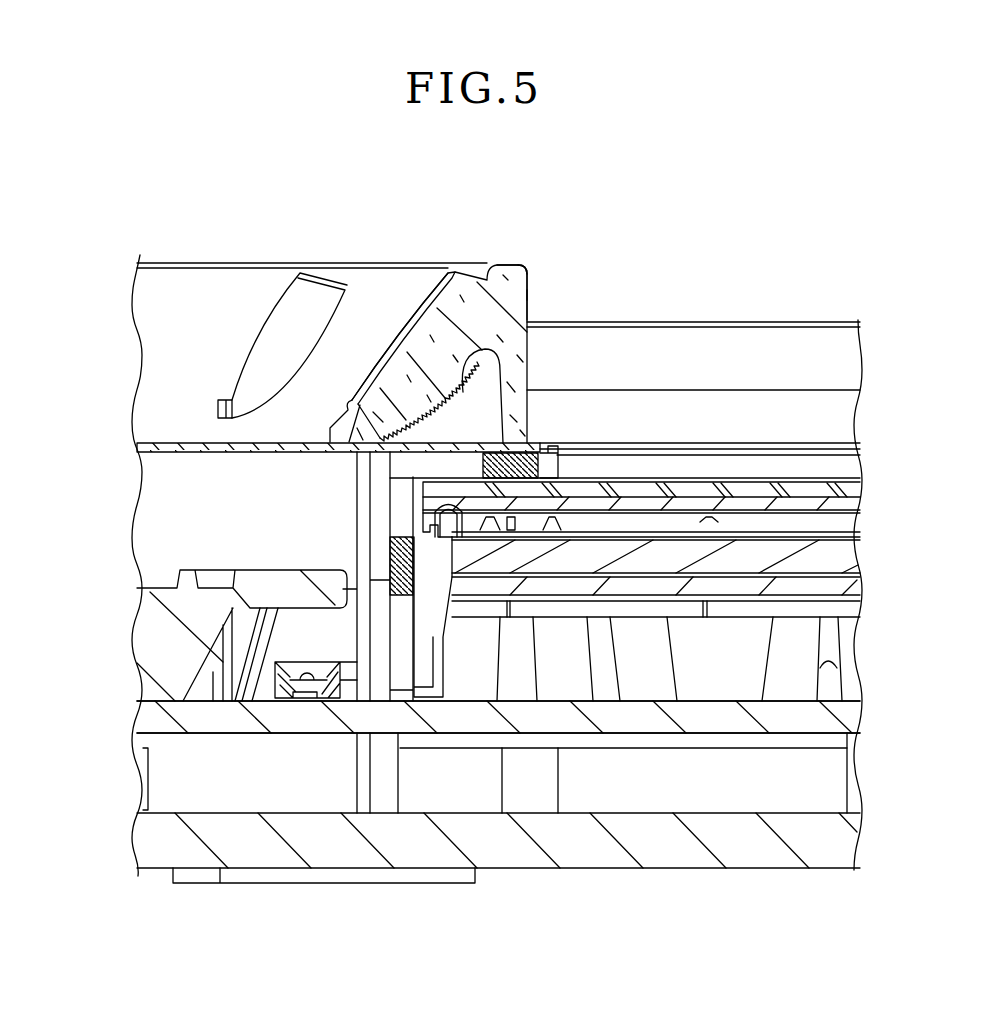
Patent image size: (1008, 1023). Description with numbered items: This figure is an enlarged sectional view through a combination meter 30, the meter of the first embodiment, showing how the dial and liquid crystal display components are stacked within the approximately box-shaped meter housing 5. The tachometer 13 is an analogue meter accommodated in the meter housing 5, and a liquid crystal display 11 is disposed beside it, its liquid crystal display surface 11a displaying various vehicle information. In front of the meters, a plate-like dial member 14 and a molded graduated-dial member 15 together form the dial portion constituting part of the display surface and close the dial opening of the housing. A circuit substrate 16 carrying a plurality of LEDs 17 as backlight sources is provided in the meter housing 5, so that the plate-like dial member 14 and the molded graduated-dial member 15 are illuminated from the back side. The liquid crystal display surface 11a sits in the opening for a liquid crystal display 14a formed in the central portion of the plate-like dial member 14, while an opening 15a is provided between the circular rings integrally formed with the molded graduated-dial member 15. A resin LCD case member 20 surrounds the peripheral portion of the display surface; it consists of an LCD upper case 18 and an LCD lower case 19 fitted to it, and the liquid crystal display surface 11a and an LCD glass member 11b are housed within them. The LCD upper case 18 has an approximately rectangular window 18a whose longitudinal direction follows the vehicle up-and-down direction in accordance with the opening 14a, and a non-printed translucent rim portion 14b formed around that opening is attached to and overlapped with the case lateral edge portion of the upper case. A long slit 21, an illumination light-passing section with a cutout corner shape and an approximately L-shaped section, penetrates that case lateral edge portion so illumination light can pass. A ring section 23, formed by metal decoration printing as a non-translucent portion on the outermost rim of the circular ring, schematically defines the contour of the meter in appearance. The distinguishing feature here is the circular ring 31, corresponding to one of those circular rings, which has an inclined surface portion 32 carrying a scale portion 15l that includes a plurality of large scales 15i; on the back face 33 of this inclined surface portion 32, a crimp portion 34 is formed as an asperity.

The meter housing 5 is at (537, 867).
The liquid crystal display 11 is at (778, 513).
The liquid crystal display surface 11a is at (753, 475).
The LCD glass member 11b is at (722, 485).
The tachometer 13 is at (183, 255).
The plate-like dial member 14 is at (190, 443).
The opening for a liquid crystal display 14a is at (552, 460).
The non-printed translucent rim portion 14b is at (482, 438).
The molded graduated-dial member 15 is at (517, 262).
The opening 15a is at (530, 303).
The large scales 15i is at (302, 298).
The scale portion 15l is at (277, 297).
The circuit substrate 16 is at (288, 715).
The LEDs 17 is at (273, 669).
The LCD upper case 18 is at (392, 587).
The window 18a is at (668, 487).
The LCD lower case 19 is at (447, 580).
The LCD case member 20 is at (413, 950).
The long slit 21 is at (410, 473).
The ring section 23 is at (531, 259).
The combination meter 30 is at (168, 893).
The circular ring 31 is at (505, 260).
The inclined surface portion 32 is at (382, 303).
The back face 33 is at (437, 412).
The crimp portion 34 is at (488, 347).